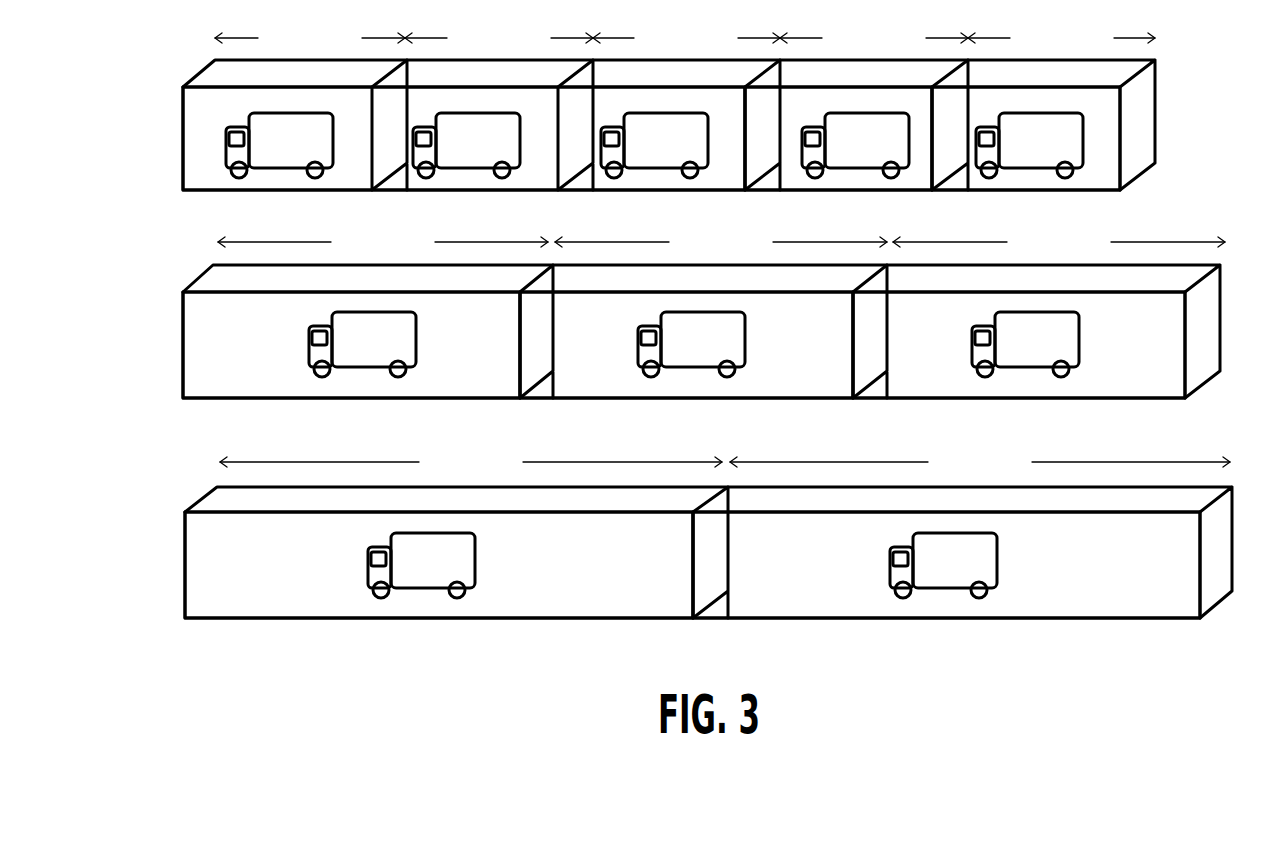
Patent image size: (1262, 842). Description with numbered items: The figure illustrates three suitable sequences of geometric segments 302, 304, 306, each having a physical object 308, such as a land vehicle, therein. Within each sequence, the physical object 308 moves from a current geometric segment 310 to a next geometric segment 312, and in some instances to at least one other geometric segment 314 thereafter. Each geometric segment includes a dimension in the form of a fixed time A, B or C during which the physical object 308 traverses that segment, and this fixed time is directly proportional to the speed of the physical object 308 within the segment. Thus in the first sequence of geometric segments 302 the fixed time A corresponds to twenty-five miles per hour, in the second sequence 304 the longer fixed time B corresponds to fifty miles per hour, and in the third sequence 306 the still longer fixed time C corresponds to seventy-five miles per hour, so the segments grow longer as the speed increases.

The sequence of geometric segments 302 is at (155, 57).
The sequence of geometric segments 304 is at (155, 262).
The sequence of geometric segments 306 is at (155, 477).
The physical object 308 is at (305, 150).
The current geometric segment 310 is at (1060, 80).
The next geometric segment 312 is at (879, 80).
The other geometric segment 314 is at (310, 80).